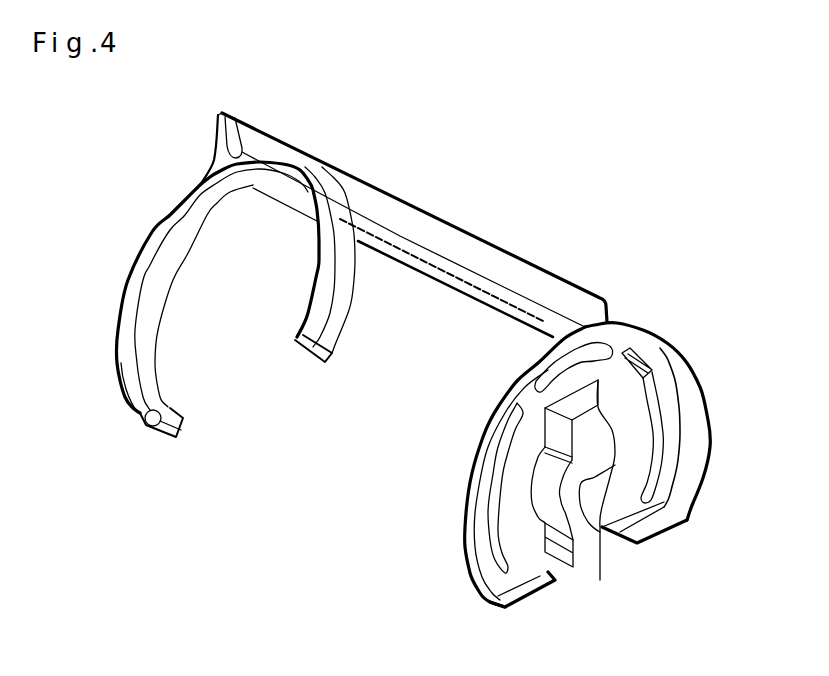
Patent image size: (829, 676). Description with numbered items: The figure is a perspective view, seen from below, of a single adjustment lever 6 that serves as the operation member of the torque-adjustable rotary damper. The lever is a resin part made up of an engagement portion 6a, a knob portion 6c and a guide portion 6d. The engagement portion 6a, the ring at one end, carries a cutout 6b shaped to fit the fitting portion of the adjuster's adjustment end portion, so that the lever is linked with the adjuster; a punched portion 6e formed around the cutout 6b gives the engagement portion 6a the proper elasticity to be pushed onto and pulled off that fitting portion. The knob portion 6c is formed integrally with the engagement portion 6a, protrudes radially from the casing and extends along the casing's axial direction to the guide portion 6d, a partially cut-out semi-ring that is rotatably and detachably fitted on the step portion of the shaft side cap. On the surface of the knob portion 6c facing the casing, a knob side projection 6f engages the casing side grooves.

The adjustment lever 6 is at (694, 227).
The engagement portion 6a is at (699, 416).
The cutout 6b is at (607, 470).
The knob portion 6c is at (450, 237).
The guide portion 6d is at (136, 290).
The punched portion 6e is at (483, 520).
The knob side projection 6f is at (460, 282).